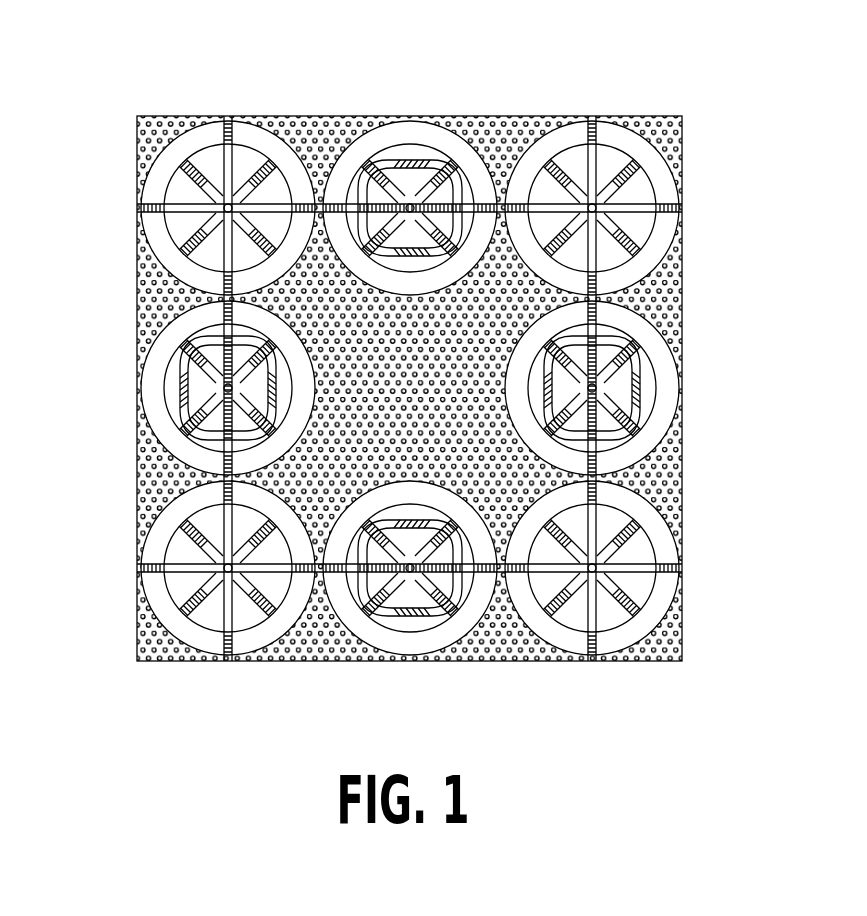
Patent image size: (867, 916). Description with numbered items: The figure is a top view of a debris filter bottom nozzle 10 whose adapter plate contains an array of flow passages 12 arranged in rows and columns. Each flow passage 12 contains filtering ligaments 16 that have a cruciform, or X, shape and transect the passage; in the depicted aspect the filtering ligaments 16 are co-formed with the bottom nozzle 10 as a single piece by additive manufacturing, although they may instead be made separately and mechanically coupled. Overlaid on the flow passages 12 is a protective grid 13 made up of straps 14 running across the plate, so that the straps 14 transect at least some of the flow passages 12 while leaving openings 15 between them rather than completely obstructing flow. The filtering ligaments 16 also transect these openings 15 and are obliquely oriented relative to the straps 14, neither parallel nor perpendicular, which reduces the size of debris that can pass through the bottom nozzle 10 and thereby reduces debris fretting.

The debris filter bottom nozzle 10 is at (632, 78).
The flow passages 12 is at (140, 156).
The protective grid 13 is at (231, 105).
The straps 14 is at (650, 172).
The openings 15 is at (607, 622).
The filtering ligaments 16 is at (635, 255).